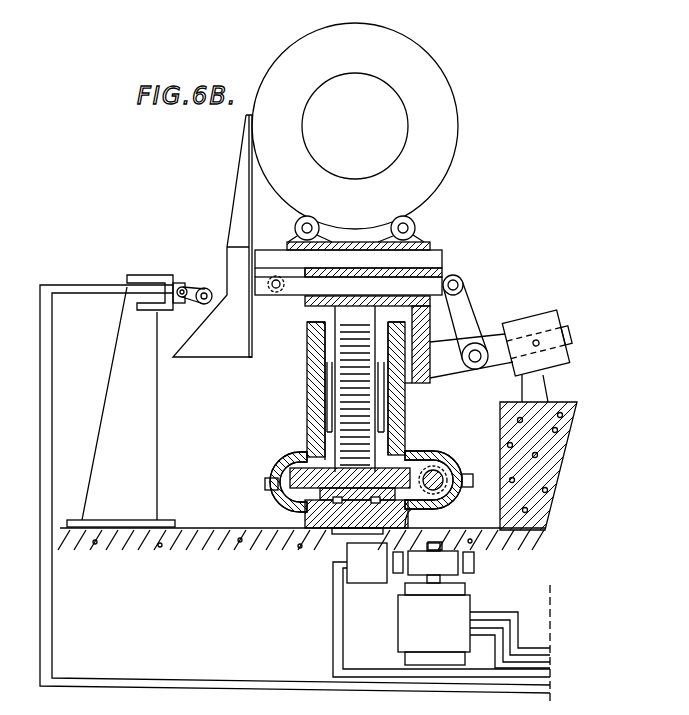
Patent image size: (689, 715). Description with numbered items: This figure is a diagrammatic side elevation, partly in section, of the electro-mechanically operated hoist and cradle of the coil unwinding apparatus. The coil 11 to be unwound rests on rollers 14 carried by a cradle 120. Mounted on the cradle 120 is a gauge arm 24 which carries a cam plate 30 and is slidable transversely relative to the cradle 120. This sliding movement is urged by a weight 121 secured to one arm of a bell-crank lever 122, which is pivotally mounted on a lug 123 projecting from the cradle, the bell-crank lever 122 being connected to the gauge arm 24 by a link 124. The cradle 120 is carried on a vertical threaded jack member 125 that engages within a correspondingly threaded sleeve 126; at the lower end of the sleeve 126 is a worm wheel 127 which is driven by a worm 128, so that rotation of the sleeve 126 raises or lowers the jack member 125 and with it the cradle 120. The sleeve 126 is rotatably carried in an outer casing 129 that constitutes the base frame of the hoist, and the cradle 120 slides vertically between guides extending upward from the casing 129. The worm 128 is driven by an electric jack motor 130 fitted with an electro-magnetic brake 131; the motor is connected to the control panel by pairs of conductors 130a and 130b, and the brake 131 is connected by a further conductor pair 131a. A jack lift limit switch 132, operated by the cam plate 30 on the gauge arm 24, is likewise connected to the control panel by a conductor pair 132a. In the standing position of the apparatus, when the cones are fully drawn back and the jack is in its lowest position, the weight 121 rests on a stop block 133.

The coil 11 is at (434, 164).
The rollers 14 is at (299, 224).
The gauge arm 24 is at (243, 178).
The cam plate 30 is at (207, 337).
The cradle 120 is at (415, 248).
The weight 121 is at (537, 327).
The bell-crank lever 122 is at (462, 307).
The lug 123 is at (442, 365).
The link 124 is at (413, 283).
The vertical threaded jack member 125 is at (345, 375).
The threaded sleeve 126 is at (327, 433).
The worm wheel 127 is at (305, 453).
The worm 128 is at (440, 457).
The outer casing 129 is at (310, 396).
The electric jack motor 130 is at (445, 607).
The conductor pair 130a is at (550, 658).
The conductor pair 130b is at (538, 643).
The electro-magnetic brake 131 is at (363, 567).
The conductor pair 131a is at (333, 613).
The jack lift limit switch 132 is at (183, 280).
The conductor pair 132a is at (202, 680).
The stop block 133 is at (525, 388).